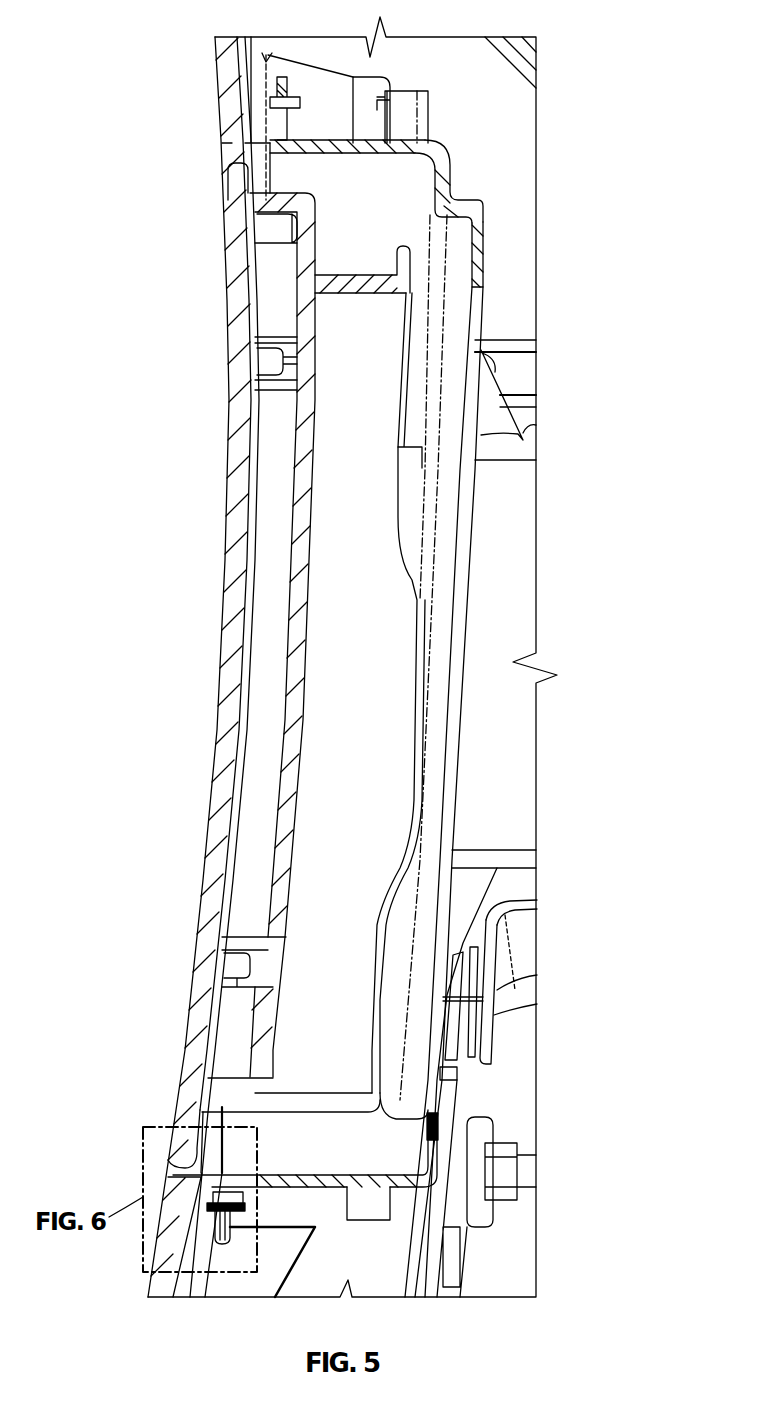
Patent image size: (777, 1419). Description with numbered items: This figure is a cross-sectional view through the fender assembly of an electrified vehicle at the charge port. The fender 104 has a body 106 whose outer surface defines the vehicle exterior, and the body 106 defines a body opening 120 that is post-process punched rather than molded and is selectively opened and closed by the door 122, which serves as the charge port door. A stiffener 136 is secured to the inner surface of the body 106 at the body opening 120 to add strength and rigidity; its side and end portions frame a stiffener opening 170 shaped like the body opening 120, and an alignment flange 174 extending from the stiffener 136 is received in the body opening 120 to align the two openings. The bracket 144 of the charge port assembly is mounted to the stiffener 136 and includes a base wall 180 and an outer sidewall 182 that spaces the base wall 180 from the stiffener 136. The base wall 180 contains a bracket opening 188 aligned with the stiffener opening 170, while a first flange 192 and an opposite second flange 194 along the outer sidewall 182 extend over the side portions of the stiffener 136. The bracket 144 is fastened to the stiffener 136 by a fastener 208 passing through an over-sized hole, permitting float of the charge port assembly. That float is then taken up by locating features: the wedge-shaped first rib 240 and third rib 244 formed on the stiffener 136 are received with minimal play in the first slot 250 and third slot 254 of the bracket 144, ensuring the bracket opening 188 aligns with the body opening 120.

The fender 104 is at (218, 103).
The body 106 is at (218, 66).
The body opening 120 is at (222, 155).
The door 122 is at (225, 605).
The stiffener 136 is at (197, 1230).
The bracket 144 is at (485, 262).
The stiffener opening 170 is at (178, 1163).
The alignment flange 174 is at (205, 1163).
The base wall 180 is at (490, 227).
The outer sidewall 182 is at (403, 143).
The bracket opening 188 is at (486, 305).
The first flange 192 is at (292, 84).
The second flange 194 is at (230, 1227).
The fastener 208 is at (373, 1200).
The first rib 240 is at (303, 108).
The third rib 244 is at (245, 1208).
The first slot 250 is at (270, 108).
The third slot 254 is at (220, 1260).